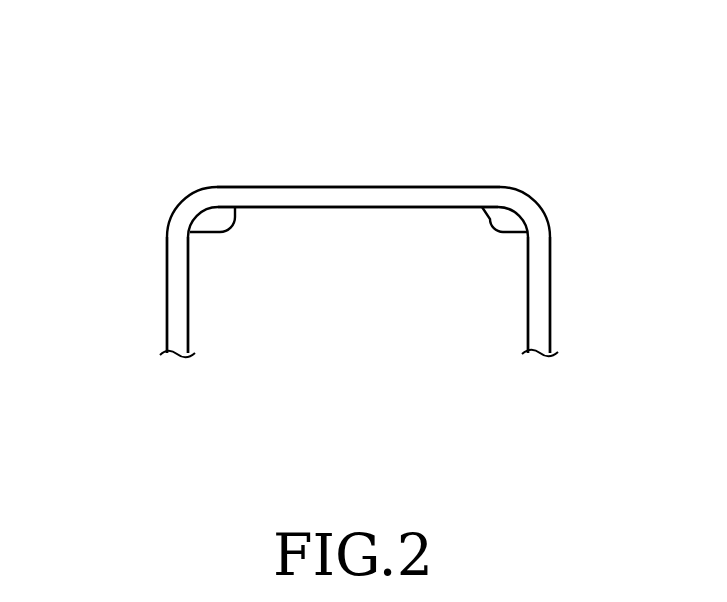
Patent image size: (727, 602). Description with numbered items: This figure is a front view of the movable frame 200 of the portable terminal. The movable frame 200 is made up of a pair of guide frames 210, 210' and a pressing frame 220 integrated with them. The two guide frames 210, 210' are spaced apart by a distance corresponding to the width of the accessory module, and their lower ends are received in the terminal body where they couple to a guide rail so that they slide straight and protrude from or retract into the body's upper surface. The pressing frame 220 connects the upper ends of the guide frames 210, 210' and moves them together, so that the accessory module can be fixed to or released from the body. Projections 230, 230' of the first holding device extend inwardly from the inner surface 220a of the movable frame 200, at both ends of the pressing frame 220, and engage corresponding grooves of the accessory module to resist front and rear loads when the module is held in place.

The movable frame 200 is at (245, 43).
The guide frame 210 is at (127, 297).
The guide frame 210' is at (585, 296).
The pressing frame 220 is at (363, 195).
The inner surface 220a is at (412, 207).
The projection 230 is at (145, 213).
The projection 230' is at (542, 189).